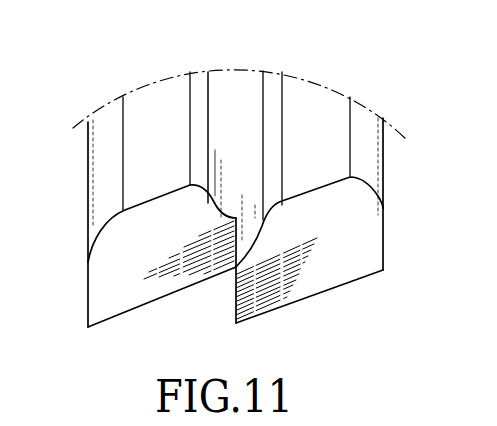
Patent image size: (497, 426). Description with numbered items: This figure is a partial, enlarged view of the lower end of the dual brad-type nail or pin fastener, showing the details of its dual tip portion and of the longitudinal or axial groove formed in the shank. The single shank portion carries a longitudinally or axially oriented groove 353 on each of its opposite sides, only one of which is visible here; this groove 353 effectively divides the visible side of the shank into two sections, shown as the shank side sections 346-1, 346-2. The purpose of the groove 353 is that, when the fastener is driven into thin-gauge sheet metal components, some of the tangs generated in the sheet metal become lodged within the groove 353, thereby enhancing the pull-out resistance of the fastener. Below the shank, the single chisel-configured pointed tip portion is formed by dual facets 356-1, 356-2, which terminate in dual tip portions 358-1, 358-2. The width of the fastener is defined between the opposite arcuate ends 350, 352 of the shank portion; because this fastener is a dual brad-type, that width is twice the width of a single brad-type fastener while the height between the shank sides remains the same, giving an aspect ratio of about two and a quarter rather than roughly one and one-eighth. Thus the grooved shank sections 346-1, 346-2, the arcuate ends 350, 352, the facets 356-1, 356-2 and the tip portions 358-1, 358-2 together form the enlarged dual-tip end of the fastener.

The shank side section 346-1 is at (162, 113).
The shank side section 346-2 is at (310, 112).
The arcuate end 350 is at (100, 170).
The arcuate end 352 is at (373, 160).
The longitudinal groove 353 is at (237, 110).
The facet 356-1 is at (135, 280).
The facet 356-2 is at (353, 267).
The tip portion 358-1 is at (162, 300).
The tip portion 358-2 is at (314, 298).